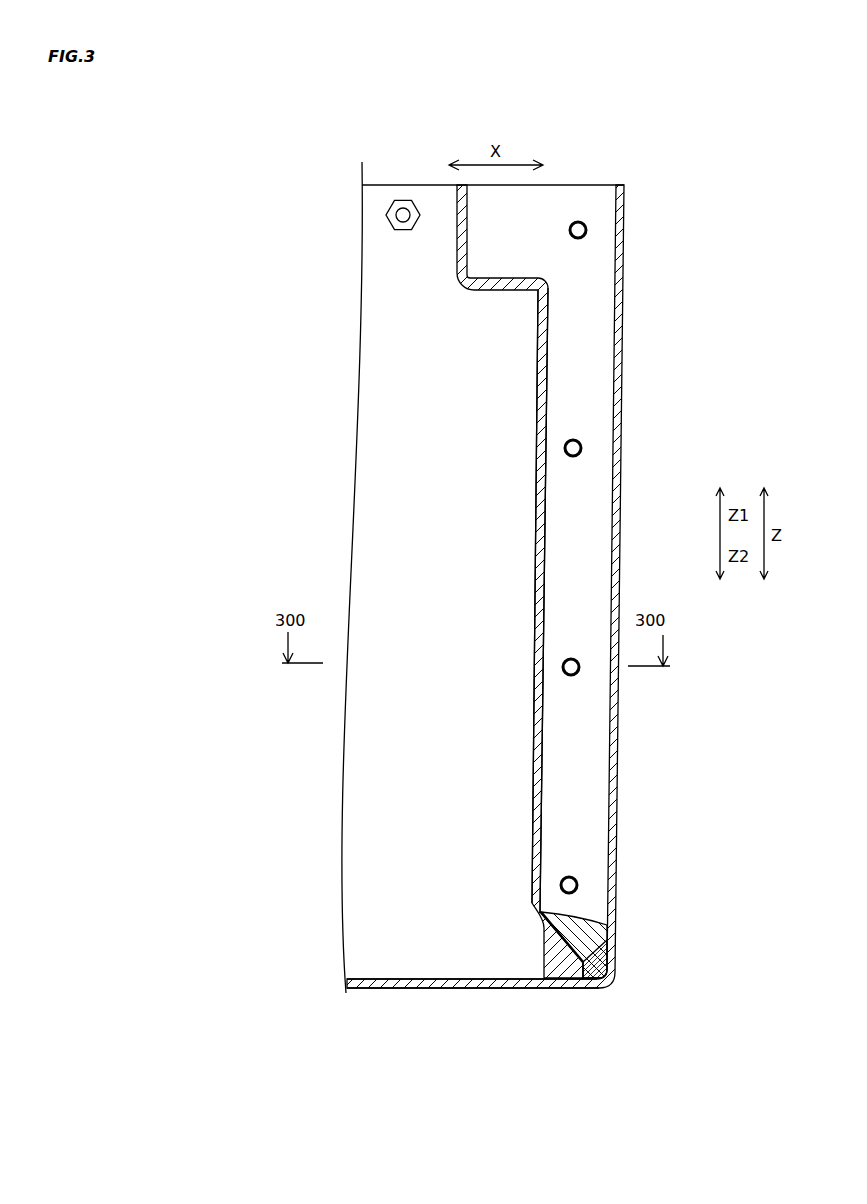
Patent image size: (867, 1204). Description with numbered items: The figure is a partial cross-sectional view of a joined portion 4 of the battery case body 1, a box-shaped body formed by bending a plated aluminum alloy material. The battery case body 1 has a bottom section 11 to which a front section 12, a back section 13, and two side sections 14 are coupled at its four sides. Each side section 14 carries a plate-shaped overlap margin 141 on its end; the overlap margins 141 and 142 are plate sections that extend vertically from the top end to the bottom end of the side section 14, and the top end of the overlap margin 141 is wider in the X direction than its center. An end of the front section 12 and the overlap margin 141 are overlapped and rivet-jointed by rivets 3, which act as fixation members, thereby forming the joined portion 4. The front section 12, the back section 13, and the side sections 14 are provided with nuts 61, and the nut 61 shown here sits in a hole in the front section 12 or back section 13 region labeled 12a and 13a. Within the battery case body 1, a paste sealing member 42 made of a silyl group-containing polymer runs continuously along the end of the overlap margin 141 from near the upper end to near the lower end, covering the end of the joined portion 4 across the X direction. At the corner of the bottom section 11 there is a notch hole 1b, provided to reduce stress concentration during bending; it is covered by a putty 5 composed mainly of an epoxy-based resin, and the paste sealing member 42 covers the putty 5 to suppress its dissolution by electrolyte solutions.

The battery case body 1 is at (530, 589).
The notch hole 1b is at (585, 972).
The rivet 3 is at (569, 230).
The joined portion 4 is at (507, 581).
The putty 5 is at (548, 949).
The bottom section 11 is at (442, 990).
The front section 12 is at (342, 577).
The back section 13 is at (342, 577).
The mounting hole 12a is at (345, 247).
The mounting hole 13a is at (345, 247).
The side section 14 is at (621, 413).
The paste sealing member 42 is at (532, 812).
The nut 61 is at (403, 232).
The overlap margin 141 is at (514, 567).
The overlap margin 142 is at (563, 568).